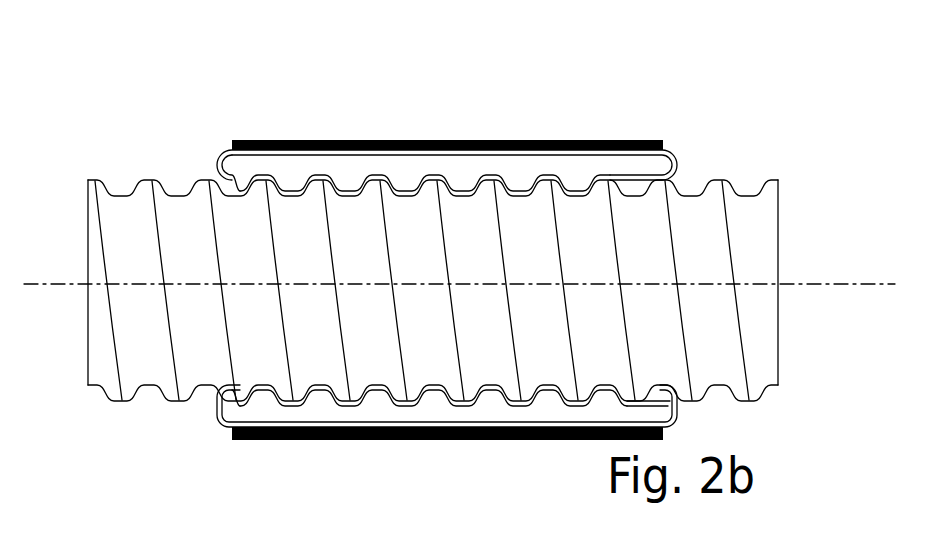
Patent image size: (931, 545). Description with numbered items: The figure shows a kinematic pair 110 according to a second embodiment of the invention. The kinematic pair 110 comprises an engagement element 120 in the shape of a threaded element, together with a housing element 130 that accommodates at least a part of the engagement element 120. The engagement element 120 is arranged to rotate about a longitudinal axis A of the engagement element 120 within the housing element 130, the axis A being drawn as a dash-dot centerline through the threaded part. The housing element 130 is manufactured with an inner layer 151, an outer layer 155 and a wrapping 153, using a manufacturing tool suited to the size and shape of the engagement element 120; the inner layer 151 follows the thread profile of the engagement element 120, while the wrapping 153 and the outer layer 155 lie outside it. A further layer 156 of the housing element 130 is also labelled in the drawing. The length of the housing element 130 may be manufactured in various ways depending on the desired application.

The kinematic pair 110 is at (433, 229).
The engagement element 120 is at (717, 178).
The housing element 130 is at (447, 229).
The inner layer 151 is at (447, 140).
The wrapping 153 is at (518, 163).
The outer layer 155 is at (388, 140).
The upper band layer 156 is at (355, 140).
The longitudinal axis A is at (836, 283).